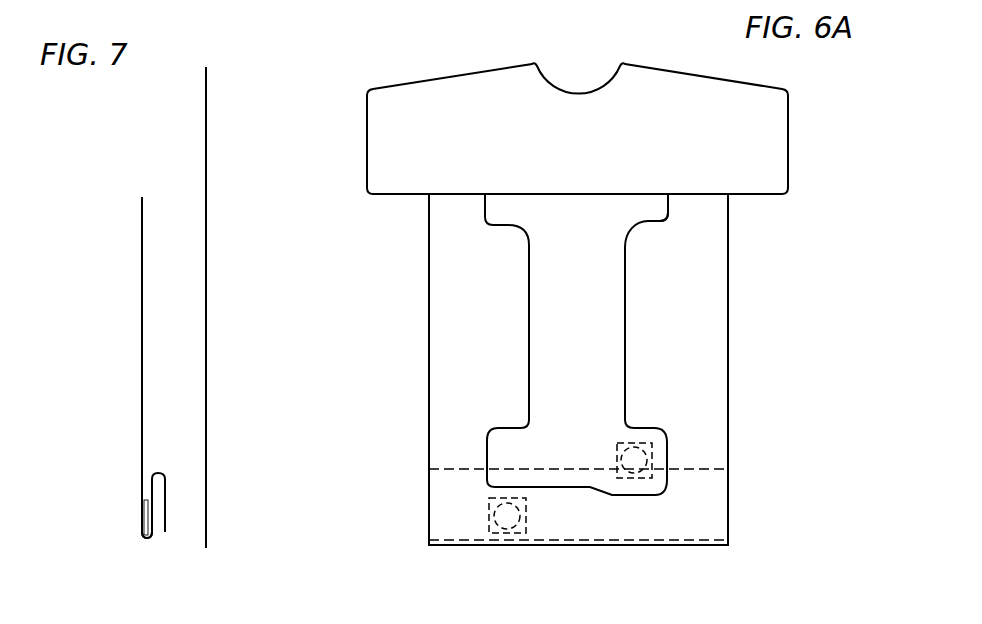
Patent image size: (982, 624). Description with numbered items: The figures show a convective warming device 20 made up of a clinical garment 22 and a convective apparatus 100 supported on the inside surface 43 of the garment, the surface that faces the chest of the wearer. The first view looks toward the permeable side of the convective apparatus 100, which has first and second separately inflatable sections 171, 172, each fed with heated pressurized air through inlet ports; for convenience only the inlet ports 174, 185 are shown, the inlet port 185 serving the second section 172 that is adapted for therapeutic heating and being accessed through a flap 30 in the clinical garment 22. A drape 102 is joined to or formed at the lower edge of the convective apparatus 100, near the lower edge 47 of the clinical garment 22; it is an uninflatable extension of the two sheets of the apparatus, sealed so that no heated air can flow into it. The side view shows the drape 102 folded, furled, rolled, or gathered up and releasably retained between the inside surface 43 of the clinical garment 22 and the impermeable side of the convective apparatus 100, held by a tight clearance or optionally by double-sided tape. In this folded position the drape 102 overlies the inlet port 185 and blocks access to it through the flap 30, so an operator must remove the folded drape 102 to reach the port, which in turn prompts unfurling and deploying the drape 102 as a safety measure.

In FIG. 6A, the convective warming device 20 is at (397, 54).
In FIG. 6A, the clinical garment 22 is at (700, 77).
In FIG. 7, the clinical garment 22 is at (206, 308).
In FIG. 7, the flap 30 is at (206, 497).
In FIG. 7, the inside surface 43 is at (206, 155).
In FIG. 6A, the lower edge 47 is at (578, 548).
In FIG. 6A, the convective apparatus 100 is at (703, 315).
In FIG. 7, the convective apparatus 100 is at (142, 272).
In FIG. 6A, the drape 102 is at (710, 512).
In FIG. 7, the drape 102 is at (147, 540).
In FIG. 6A, the first separately inflatable section 171 is at (668, 212).
In FIG. 6A, the second separately inflatable section 172 is at (443, 246).
In FIG. 6A, the inlet port 174 is at (642, 437).
In FIG. 6A, the inlet port 185 is at (489, 516).
In FIG. 7, the inlet port 185 is at (142, 517).